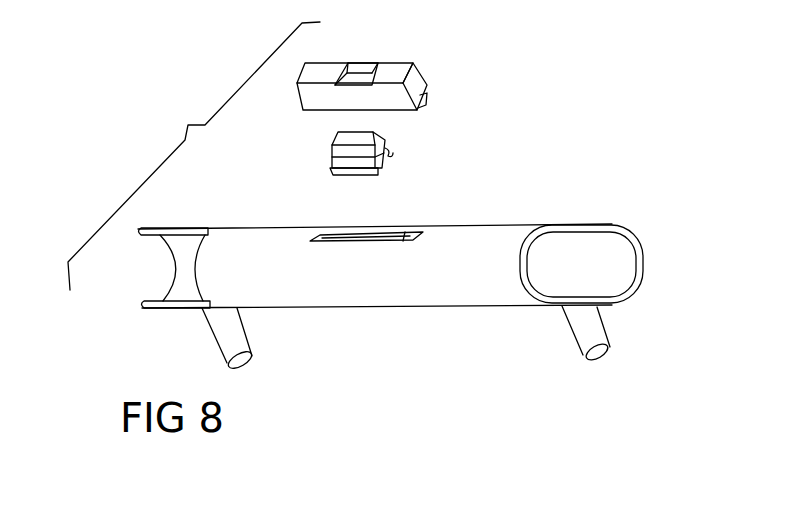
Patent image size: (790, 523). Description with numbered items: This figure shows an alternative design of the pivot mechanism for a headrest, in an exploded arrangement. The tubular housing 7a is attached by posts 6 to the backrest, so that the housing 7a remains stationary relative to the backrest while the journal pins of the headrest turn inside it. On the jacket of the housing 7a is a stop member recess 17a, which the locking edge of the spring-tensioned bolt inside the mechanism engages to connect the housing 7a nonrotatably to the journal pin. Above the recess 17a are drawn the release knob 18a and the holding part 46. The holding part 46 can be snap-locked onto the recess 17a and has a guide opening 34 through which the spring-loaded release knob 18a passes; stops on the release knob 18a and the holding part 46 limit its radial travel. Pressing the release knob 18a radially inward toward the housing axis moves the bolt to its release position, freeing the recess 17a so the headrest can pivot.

The housing 7a is at (262, 210).
The stop member recess 17a is at (407, 235).
The posts 6 is at (238, 345).
The holding part 46 is at (322, 72).
The guide opening 34 is at (368, 68).
The release knob 18a is at (393, 153).